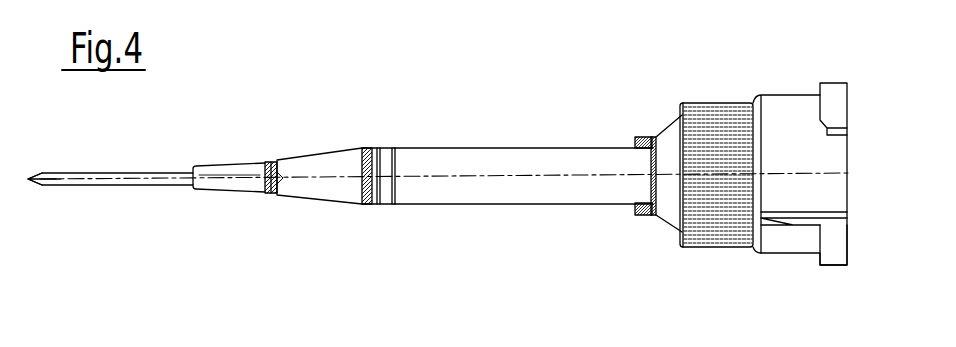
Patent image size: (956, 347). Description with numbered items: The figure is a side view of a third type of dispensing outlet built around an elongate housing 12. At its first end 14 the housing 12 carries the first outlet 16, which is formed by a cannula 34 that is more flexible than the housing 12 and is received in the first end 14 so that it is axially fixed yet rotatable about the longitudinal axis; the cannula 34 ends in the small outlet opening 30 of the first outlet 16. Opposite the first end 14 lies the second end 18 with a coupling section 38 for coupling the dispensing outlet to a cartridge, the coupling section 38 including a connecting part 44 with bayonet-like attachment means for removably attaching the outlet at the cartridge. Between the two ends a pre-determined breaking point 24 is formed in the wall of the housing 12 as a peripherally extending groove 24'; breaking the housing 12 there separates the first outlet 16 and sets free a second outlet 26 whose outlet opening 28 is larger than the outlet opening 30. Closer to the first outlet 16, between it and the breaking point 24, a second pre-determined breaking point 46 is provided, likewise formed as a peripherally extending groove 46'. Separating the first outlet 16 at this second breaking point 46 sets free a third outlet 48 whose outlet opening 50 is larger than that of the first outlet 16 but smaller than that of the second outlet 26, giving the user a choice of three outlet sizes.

The housing 12 is at (526, 153).
The first end 14 is at (210, 187).
The first outlet 16 is at (40, 183).
The second end 18 is at (800, 150).
The pre-determined breaking point 24 is at (411, 134).
The groove 24' is at (411, 134).
The second outlet 26 is at (366, 147).
The outlet opening 28 is at (377, 179).
The outlet opening 30 is at (58, 225).
The cannula 34 is at (108, 172).
The coupling section 38 is at (783, 122).
The connecting part 44 is at (833, 252).
The second pre-determined breaking point 46 is at (264, 226).
The groove 46' is at (264, 226).
The third outlet 48 is at (273, 186).
The outlet opening 50 is at (279, 178).